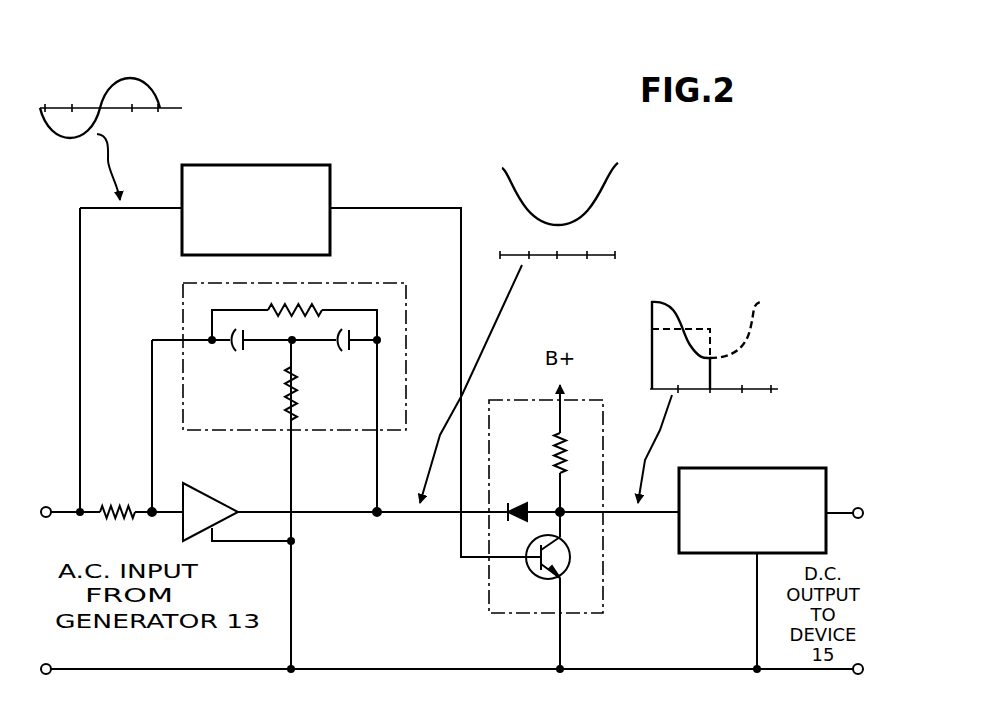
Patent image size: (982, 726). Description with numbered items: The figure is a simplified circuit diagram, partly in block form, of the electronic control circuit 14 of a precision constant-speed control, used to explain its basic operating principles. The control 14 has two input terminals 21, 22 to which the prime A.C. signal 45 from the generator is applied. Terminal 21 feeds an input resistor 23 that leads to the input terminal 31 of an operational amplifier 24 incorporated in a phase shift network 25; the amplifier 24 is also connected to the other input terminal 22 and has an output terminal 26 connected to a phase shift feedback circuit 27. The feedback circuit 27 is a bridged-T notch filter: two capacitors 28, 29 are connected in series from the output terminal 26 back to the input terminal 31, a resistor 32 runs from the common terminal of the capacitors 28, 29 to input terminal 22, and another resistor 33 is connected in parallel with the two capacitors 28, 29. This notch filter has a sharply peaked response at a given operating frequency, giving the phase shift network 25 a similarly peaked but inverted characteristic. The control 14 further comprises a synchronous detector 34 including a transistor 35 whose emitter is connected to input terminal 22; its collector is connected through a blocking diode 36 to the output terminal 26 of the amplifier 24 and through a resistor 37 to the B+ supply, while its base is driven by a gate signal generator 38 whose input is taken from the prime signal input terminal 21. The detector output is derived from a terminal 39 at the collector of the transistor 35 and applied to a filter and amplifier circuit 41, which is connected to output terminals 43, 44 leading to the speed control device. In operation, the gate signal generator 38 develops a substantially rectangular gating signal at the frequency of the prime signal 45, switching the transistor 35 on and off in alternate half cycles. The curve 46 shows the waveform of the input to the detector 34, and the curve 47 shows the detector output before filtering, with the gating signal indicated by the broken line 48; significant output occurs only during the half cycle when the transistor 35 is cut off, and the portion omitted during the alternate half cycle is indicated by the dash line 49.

The electronic control circuit 14 is at (402, 188).
The input terminal 21 is at (47, 507).
The input terminal 22 is at (50, 678).
The input resistor 23 is at (117, 502).
The operational amplifier 24 is at (200, 512).
The phase shift network 25 is at (338, 535).
The output terminal 26 is at (380, 518).
The phase shift feedback circuit 27 is at (386, 283).
The capacitor 28 is at (346, 352).
The capacitor 29 is at (232, 352).
The input terminal 31 is at (152, 508).
The resistor 32 is at (296, 400).
The resistor 33 is at (282, 306).
The synchronous detector 34 is at (620, 598).
The transistor 35 is at (536, 572).
The blocking diode 36 is at (515, 503).
The resistor 37 is at (555, 440).
The gate signal generator 38 is at (300, 178).
The terminal 39 is at (562, 510).
The filter and amplifier circuit 41 is at (751, 468).
The output terminal 43 is at (858, 506).
The output terminal 44 is at (858, 676).
The prime electrical signal 45 is at (140, 80).
The curve 46 is at (532, 188).
The curve 47 is at (672, 310).
The broken line 48 is at (700, 328).
The dash line 49 is at (745, 318).